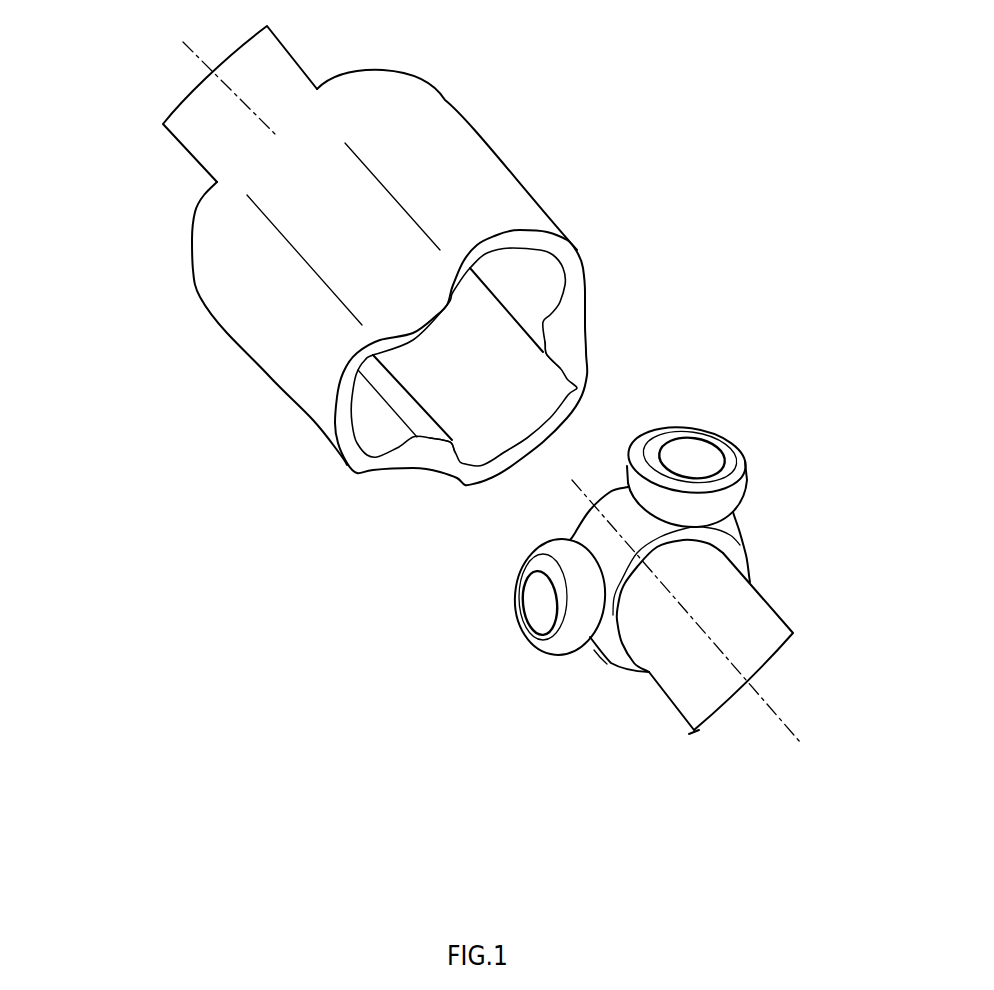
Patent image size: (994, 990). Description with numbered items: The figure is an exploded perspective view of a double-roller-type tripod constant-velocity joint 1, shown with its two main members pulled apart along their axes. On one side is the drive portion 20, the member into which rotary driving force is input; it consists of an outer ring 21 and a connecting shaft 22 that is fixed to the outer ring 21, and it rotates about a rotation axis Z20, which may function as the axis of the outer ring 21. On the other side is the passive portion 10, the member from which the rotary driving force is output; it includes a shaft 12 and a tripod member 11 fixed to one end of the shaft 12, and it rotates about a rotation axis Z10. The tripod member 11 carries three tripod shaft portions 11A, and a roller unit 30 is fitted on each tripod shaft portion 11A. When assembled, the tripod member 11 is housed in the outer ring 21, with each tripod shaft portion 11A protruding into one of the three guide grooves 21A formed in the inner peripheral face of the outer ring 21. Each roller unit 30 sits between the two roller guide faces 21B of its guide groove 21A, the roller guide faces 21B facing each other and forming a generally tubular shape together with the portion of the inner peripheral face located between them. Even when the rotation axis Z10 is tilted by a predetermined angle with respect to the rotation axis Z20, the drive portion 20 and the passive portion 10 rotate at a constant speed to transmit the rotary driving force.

The double-roller-type tripod constant-velocity joint 1 is at (722, 149).
The passive portion 10 is at (468, 652).
The tripod member 11 is at (763, 521).
The tripod shaft portion 11A is at (695, 452).
The shaft 12 is at (800, 598).
The roller unit 30 is at (758, 440).
The drive portion 20 is at (330, 491).
The outer ring 21 is at (480, 120).
The guide groove 21A is at (508, 426).
The roller guide face 21B is at (550, 374).
The connecting shaft 22 is at (303, 55).
The rotation axis of the passive portion Z10 is at (777, 728).
The rotation axis of the drive portion Z20 is at (191, 66).